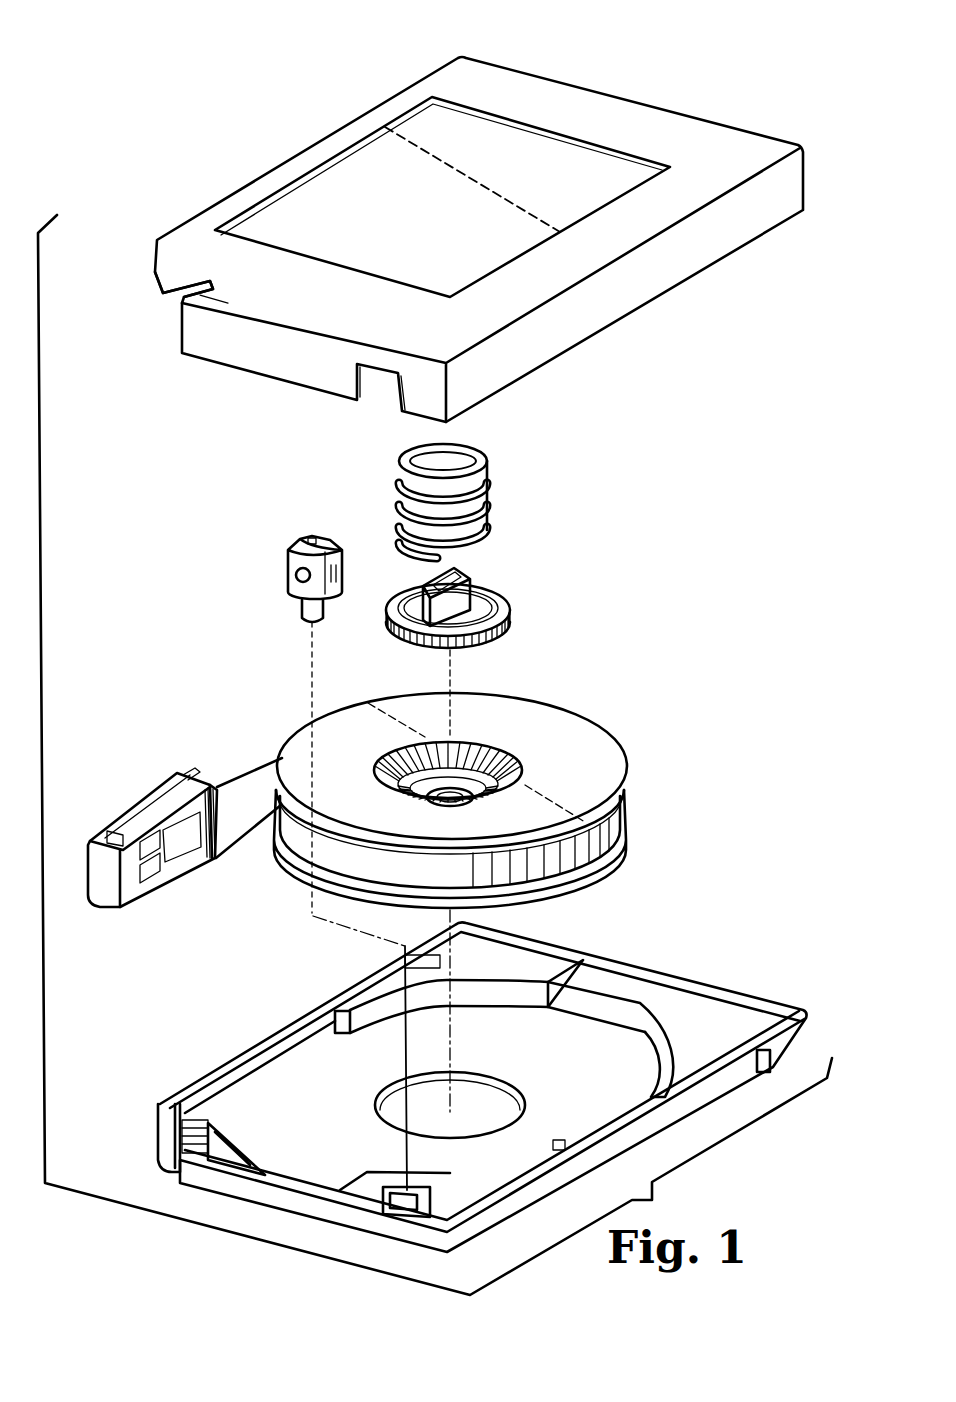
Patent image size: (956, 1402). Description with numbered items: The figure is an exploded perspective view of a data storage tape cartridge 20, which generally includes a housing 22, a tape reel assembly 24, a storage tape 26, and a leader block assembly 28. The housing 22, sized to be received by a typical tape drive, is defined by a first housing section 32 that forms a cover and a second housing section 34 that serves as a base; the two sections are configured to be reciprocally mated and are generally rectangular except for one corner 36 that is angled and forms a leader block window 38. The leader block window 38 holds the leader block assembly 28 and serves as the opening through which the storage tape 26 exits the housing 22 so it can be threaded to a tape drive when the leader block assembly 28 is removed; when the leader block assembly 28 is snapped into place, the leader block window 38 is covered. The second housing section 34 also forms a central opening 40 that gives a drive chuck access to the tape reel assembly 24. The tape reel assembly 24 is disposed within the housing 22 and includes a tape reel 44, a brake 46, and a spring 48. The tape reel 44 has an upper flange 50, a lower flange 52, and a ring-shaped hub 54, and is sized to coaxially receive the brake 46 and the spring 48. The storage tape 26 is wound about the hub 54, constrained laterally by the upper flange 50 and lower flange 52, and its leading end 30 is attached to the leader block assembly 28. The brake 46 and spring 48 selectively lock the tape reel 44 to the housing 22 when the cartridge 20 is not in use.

The data storage tape cartridge 20 is at (766, 72).
The housing 22 is at (768, 120).
The tape reel assembly 24 is at (572, 572).
The storage tape 26 is at (240, 779).
The leader block assembly 28 is at (114, 813).
The leading end 30 is at (213, 787).
The first housing section 32 is at (585, 80).
The second housing section 34 is at (729, 967).
The corner 36 is at (154, 268).
The leader block window 38 is at (155, 1150).
The central opening 40 is at (493, 1083).
The tape reel 44 is at (586, 710).
The brake 46 is at (518, 621).
The spring 48 is at (500, 492).
The upper flange 50 is at (605, 762).
The lower flange 52 is at (622, 815).
The hub 54 is at (477, 757).